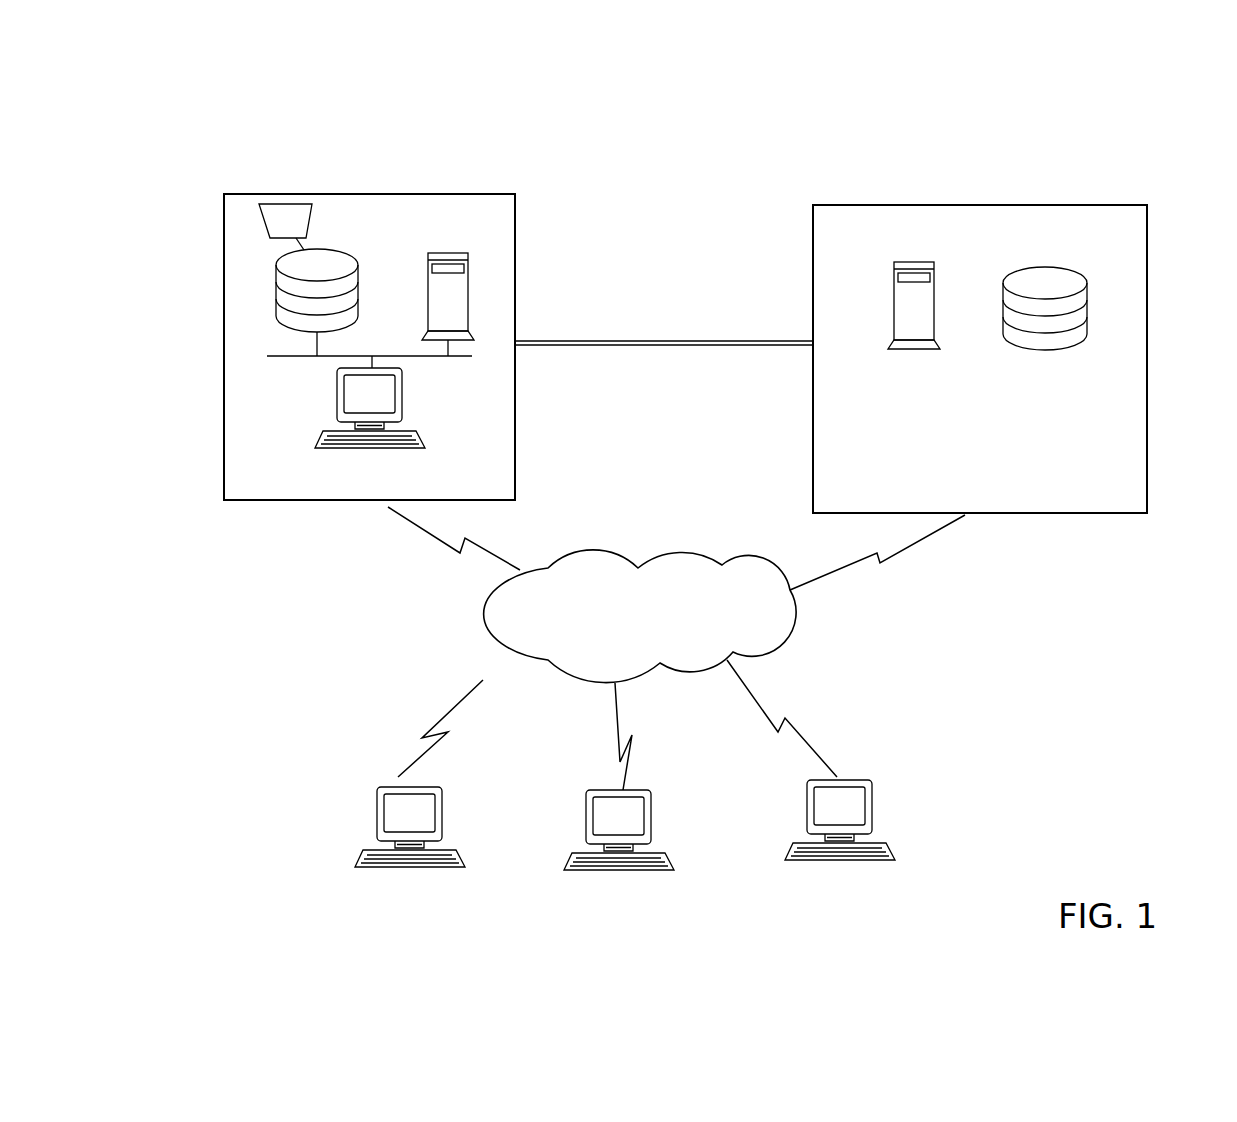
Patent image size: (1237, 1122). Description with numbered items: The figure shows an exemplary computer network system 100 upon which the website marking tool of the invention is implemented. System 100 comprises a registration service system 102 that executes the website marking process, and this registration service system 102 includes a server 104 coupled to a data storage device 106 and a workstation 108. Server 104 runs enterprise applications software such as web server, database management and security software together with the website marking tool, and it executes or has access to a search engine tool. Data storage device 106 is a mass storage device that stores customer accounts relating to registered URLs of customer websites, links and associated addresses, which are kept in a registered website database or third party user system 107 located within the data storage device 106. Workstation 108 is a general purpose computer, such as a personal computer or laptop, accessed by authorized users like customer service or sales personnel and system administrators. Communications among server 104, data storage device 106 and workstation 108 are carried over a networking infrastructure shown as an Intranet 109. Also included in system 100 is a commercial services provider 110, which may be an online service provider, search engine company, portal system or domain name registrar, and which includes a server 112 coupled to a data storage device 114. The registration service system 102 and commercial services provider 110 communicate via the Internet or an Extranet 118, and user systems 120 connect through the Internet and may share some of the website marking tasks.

The computer network system 100 is at (720, 90).
The registration service system 102 is at (513, 197).
The server 104 is at (473, 243).
The data storage device 106 is at (348, 251).
The registered website database 107 is at (313, 215).
The workstation 108 is at (403, 390).
The Intranet 109 is at (391, 354).
The commercial services provider 110 is at (1144, 208).
The server 112 is at (925, 262).
The data storage device 114 is at (1070, 271).
The Extranet 118 is at (670, 336).
The user systems 120 is at (455, 786).